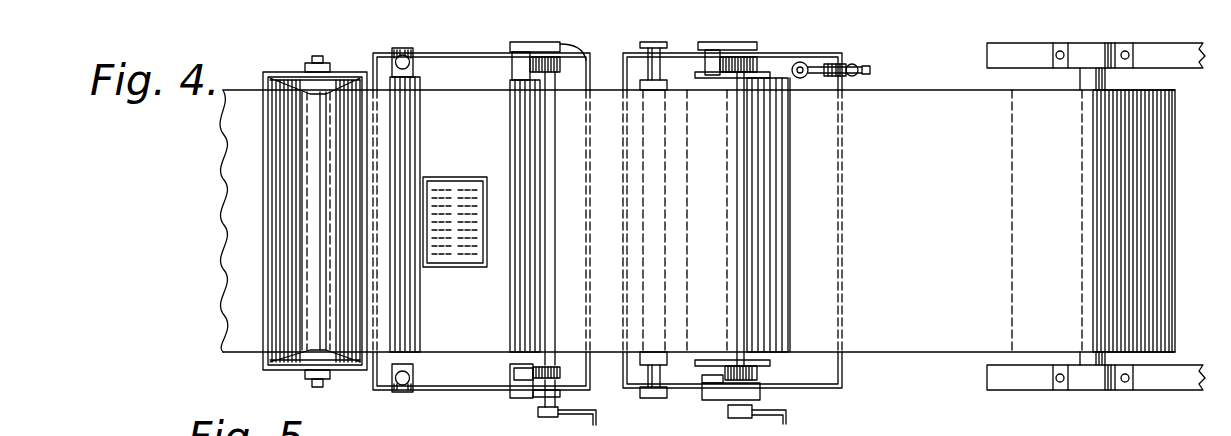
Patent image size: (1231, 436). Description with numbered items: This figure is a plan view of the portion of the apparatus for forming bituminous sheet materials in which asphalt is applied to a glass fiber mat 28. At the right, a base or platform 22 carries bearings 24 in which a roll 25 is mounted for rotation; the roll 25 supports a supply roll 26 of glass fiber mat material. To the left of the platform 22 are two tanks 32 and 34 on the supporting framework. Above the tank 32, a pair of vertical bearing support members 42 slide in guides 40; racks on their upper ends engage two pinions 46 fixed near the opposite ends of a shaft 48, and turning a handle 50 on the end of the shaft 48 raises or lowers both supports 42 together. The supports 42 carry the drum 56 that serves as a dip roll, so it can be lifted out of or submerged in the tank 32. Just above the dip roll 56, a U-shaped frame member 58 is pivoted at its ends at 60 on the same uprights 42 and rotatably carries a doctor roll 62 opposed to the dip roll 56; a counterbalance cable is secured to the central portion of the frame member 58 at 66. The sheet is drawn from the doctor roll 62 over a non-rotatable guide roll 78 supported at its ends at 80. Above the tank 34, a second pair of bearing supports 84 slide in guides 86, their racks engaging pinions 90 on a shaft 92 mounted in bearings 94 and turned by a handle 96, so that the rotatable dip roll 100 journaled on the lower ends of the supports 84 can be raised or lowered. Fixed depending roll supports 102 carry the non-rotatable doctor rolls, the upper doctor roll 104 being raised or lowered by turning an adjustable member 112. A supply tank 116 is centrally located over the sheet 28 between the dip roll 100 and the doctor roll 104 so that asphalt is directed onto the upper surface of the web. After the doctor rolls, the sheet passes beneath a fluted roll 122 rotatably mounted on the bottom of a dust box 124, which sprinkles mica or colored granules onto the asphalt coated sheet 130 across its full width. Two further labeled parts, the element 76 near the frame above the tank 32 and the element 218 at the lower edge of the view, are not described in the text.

The base or platform 22 is at (1185, 392).
The bearings 24 is at (1076, 69).
The roll 25 is at (1093, 354).
The supply roll 26 is at (1140, 106).
The glass fiber mat 28 is at (944, 338).
The tank 32 is at (836, 388).
The tank 34 is at (436, 386).
The guides 40 is at (703, 382).
The bearing support members 42 is at (708, 64).
The pinion 46 is at (758, 50).
The shaft 48 is at (757, 384).
The handle 50 is at (792, 422).
The drum 56 is at (705, 226).
The U-shaped frame member 58 is at (787, 156).
The pivot 60 is at (716, 356).
The doctor roll 62 is at (772, 291).
The cable attachment point 66 is at (790, 219).
The adjustment knob 76 is at (840, 73).
The guide roll 78 is at (642, 282).
The guide roll supports 80 is at (647, 46).
The bearing supports 84 is at (515, 70).
The guides 86 is at (513, 47).
The pinion 90 is at (558, 74).
The shaft 92 is at (555, 190).
The bearings 94 is at (586, 70).
The handle 96 is at (567, 408).
The dip roll 100 is at (512, 298).
The roll supports 102 is at (380, 46).
The doctor roll 104 is at (412, 153).
The adjustable member 112 is at (414, 66).
The supply tank 116 is at (471, 178).
The roll 122 is at (306, 212).
The dust box 124 is at (264, 312).
The asphalt coated sheet 130 is at (246, 162).
The drive 218 is at (474, 435).